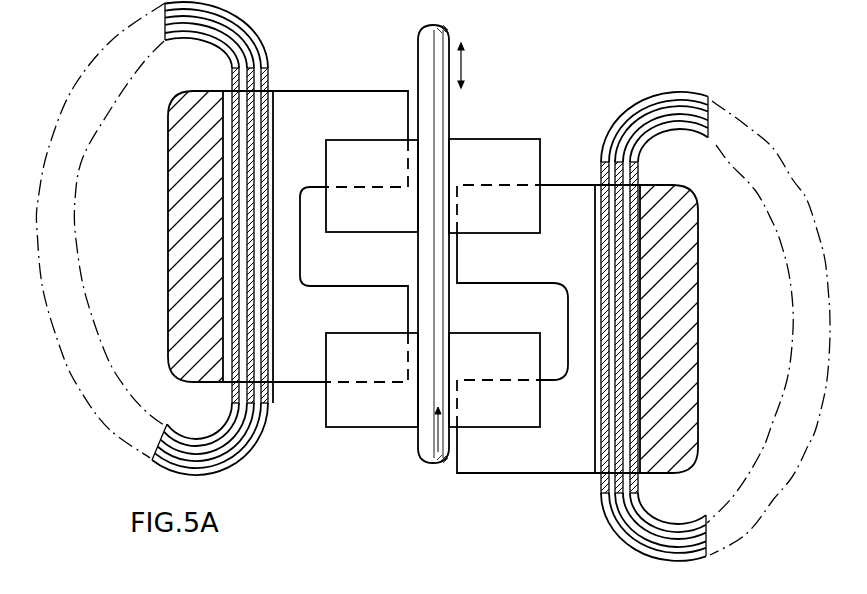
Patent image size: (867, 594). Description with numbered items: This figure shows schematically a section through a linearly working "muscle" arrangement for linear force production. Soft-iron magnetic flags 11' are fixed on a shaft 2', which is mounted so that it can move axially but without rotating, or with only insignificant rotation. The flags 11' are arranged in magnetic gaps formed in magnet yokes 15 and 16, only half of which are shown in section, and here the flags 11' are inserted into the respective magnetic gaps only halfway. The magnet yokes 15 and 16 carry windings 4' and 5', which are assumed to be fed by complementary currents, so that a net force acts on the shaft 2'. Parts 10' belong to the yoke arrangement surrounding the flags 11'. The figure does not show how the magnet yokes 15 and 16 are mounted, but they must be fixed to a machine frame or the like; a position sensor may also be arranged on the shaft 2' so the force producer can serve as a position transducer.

The shaft 2' is at (421, 236).
The winding 4' is at (152, 238).
The winding 5' is at (715, 326).
The pole piece 10' is at (431, 286).
The soft-iron magnetic flag 11' is at (441, 262).
The magnet yoke 15 is at (297, 383).
The magnet yoke 16 is at (566, 474).